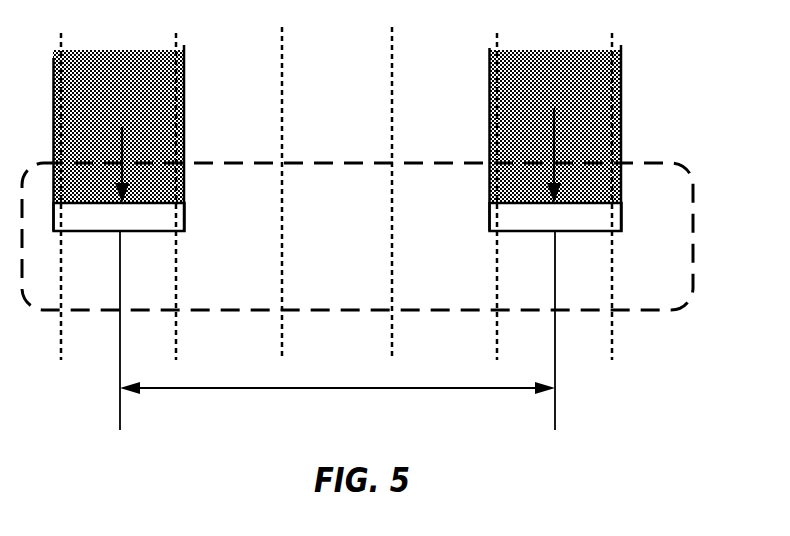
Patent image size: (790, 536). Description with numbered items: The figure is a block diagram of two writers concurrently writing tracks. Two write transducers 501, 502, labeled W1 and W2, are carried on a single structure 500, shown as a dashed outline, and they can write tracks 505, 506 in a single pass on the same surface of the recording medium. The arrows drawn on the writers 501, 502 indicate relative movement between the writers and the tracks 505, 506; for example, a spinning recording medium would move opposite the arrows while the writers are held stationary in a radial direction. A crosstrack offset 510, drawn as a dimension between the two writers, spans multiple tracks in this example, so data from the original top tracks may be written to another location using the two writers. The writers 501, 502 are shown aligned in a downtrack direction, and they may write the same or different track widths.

The single structure 500 is at (221, 168).
The write transducer 501 is at (140, 233).
The write transducer 502 is at (566, 233).
The track 505 is at (112, 62).
The track 506 is at (549, 62).
The crosstrack offset 510 is at (352, 390).